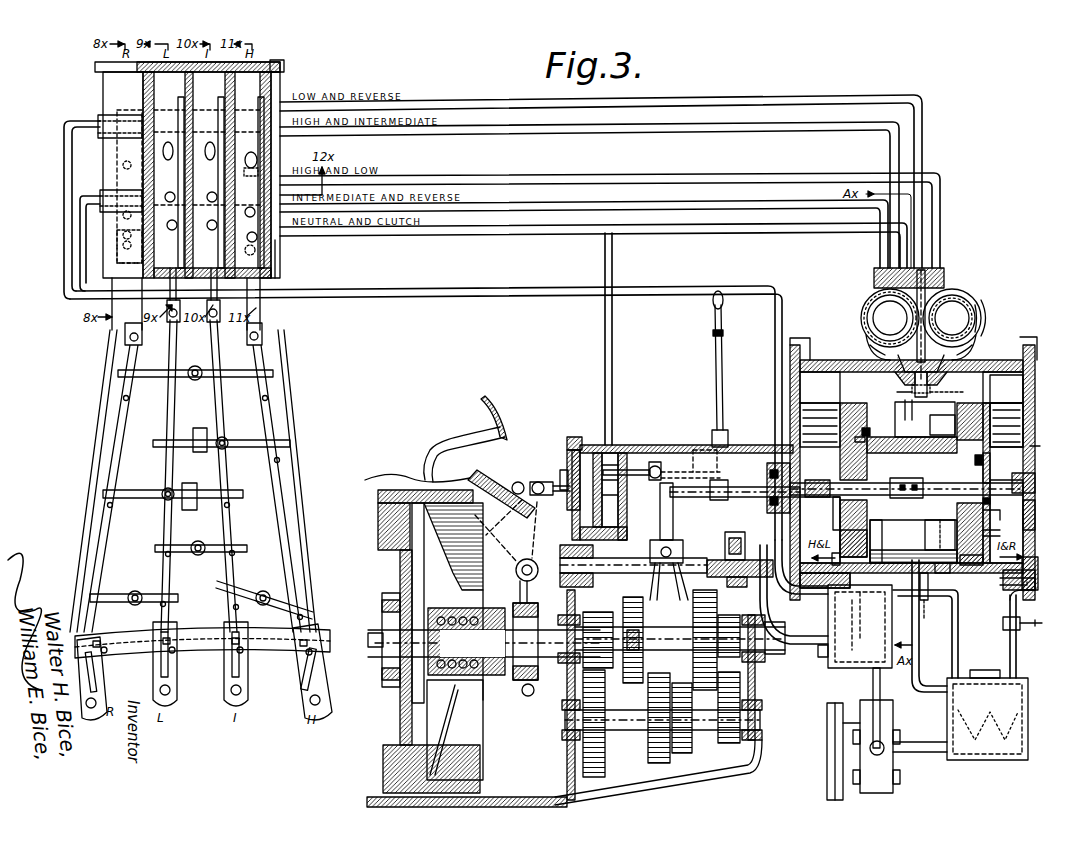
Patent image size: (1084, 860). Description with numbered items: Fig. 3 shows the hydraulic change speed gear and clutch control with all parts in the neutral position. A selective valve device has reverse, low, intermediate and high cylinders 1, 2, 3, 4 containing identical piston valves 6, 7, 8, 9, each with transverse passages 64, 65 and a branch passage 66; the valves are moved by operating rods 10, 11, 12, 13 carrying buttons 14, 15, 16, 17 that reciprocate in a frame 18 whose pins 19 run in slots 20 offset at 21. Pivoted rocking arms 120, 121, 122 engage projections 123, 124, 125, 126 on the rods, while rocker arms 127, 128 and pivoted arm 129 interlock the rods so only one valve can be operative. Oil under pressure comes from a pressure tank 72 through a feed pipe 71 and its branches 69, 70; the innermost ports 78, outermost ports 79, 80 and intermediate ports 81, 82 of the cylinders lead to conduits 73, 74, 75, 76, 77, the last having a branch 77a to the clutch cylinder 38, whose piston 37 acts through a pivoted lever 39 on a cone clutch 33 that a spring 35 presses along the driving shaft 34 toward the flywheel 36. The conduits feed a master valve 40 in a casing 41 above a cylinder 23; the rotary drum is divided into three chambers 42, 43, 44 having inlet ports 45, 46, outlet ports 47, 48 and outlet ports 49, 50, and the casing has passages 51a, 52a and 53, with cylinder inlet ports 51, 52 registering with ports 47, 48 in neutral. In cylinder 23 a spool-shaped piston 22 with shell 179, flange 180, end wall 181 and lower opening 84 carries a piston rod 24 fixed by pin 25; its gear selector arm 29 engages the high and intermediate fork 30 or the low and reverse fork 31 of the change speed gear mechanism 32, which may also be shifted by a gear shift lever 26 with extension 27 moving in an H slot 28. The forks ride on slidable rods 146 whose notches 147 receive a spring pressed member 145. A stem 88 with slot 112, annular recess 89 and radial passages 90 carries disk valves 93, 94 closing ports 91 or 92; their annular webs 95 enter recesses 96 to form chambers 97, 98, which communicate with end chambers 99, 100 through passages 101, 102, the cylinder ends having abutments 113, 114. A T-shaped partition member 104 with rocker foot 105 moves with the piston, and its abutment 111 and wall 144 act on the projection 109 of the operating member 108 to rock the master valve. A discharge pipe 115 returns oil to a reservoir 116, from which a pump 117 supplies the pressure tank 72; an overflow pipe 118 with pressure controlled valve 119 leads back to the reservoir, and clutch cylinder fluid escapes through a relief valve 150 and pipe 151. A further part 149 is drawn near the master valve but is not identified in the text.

The reverse cylinder 1 is at (140, 92).
The low cylinder 2 is at (178, 112).
The intermediate cylinder 3 is at (210, 113).
The high cylinder 4 is at (250, 113).
The reverse piston valve 6 is at (143, 259).
The low piston valve 7 is at (168, 275).
The intermediate piston valve 8 is at (213, 275).
The high piston valve 9 is at (276, 260).
The reverse valve operating rod 10 is at (112, 453).
The low valve operating rod 11 is at (167, 475).
The intermediate valve operating rod 12 is at (226, 480).
The high valve operating rod 13 is at (282, 484).
The reverse button 14 is at (89, 719).
The low button 15 is at (175, 706).
The intermediate button 16 is at (245, 706).
The high gear button 17 is at (332, 708).
The frame 18 is at (204, 656).
The pins 19 is at (243, 653).
The slots 20 is at (316, 680).
The offset 21 is at (308, 643).
The piston 22 is at (1036, 526).
The cylinder 23 is at (1035, 592).
The piston rod 24 is at (750, 486).
The pin 25 is at (913, 541).
The gear shift lever 26 is at (705, 466).
The extension 27 is at (715, 395).
The H slot 28 is at (729, 433).
The gear selector arm 29 is at (660, 510).
The high and intermediate gear selector fork 30 is at (615, 608).
The low and reverse gear selector fork 31 is at (672, 587).
The change speed gear mechanism 32 is at (708, 734).
The cone clutch 33 is at (465, 742).
The driving shaft 34 is at (540, 608).
The spring 35 is at (470, 616).
The flywheel 36 is at (383, 766).
The piston 37 is at (573, 478).
The cylinder 38 is at (600, 445).
The pivoted lever 39 is at (515, 530).
The master valve 40 is at (962, 305).
The casing 41 is at (981, 316).
The chamber 42 is at (873, 312).
The chamber 43 is at (926, 278).
The chamber 44 is at (940, 292).
The inlet port 45 is at (862, 335).
The inlet port 46 is at (975, 335).
The outlet port 47 is at (866, 350).
The outlet port 48 is at (972, 352).
The outlet port 49 is at (898, 362).
The outlet port 50 is at (948, 366).
The inlet port 51 is at (805, 345).
The passage 51a is at (882, 293).
The inlet port 52 is at (1020, 345).
The passage 52a is at (972, 302).
The passage 53 is at (915, 297).
The transverse passage 64 is at (258, 160).
The transverse passage 65 is at (258, 239).
The branch passage 66 is at (255, 214).
The branch 69 is at (99, 194).
The branch 70 is at (82, 124).
The feed pipe 71 is at (806, 655).
The pressure tank 72 is at (840, 672).
The conduit 73 is at (511, 108).
The conduit 74 is at (517, 136).
The conduit 75 is at (585, 179).
The conduit 76 is at (538, 210).
The conduit 77 is at (530, 240).
The branch 77a is at (604, 345).
The innermost ports 78 is at (248, 262).
The outermost ports 79 is at (118, 138).
The outermost ports 80 is at (262, 95).
The intermediate ports 81 is at (131, 190).
The intermediate ports 82 is at (259, 170).
The opening 84 is at (945, 573).
The stem 88 is at (991, 475).
The annular recess 89 is at (991, 502).
The radial passages 90 is at (985, 460).
The ports 91 is at (826, 586).
The ports 92 is at (975, 565).
The disk valve 93 is at (833, 562).
The disk valve 94 is at (1000, 516).
The annular webs 95 is at (868, 430).
The circular recesses 96 is at (862, 438).
The chamber 97 is at (836, 508).
The chamber 98 is at (1002, 534).
The end chamber 99 is at (808, 405).
The end chamber 100 is at (1028, 420).
The passage 101 is at (900, 437).
The passage 102 is at (888, 520).
The partition member 104 is at (1030, 392).
The rocker foot 105 is at (937, 437).
The operating member 108 is at (923, 368).
The projection 109 is at (905, 420).
The abutment 111 is at (959, 392).
The slot 112 is at (920, 520).
The abutment 113 is at (815, 480).
The abutment 114 is at (1035, 486).
The discharge pipe 115 is at (919, 653).
The reservoir 116 is at (1005, 697).
The pump 117 is at (893, 765).
The overflow pipe 118 is at (1008, 605).
The pressure controlled valve 119 is at (1022, 630).
The pivoted rocking arm 120 is at (247, 378).
The pivoted rocking arm 121 is at (253, 448).
The pivoted rocking arm 122 is at (275, 605).
The projections 123 is at (303, 616).
The projection 124 is at (107, 506).
The projection 125 is at (160, 606).
The projection 126 is at (233, 608).
The pivoted rocker arm 127 is at (143, 499).
The pivoted rocker arm 128 is at (122, 594).
The pivoted arm 129 is at (185, 553).
The wall 144 is at (931, 389).
The spring pressed member 145 is at (742, 532).
The slidably supported rods 146 is at (612, 574).
The notches 147 is at (735, 587).
The passage 149 is at (897, 393).
The relief valve 150 is at (655, 462).
The pipe 151 is at (960, 640).
The shell 179 is at (928, 600).
The end wall 180 is at (845, 527).
The end wall 181 is at (1040, 447).